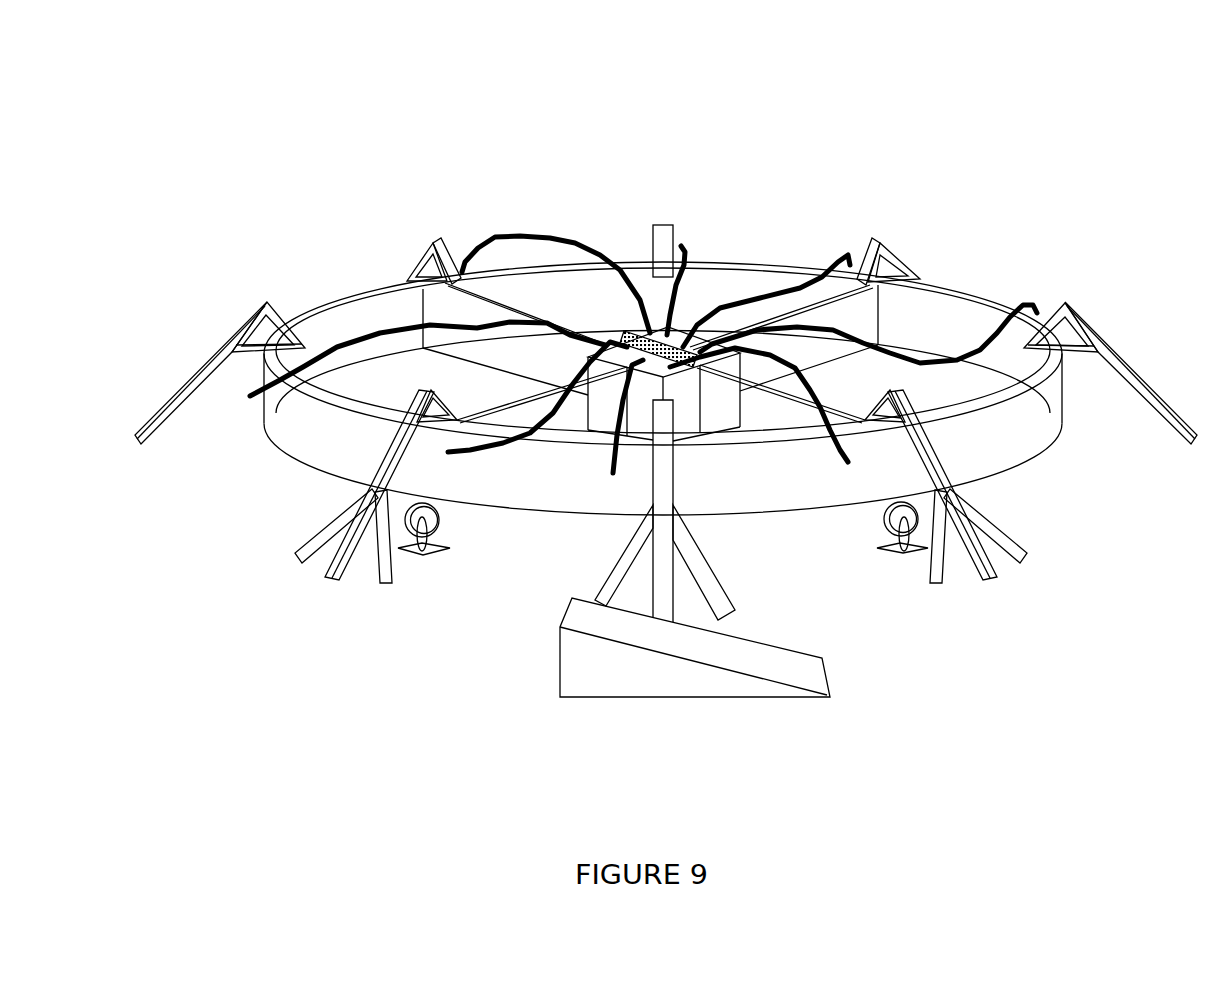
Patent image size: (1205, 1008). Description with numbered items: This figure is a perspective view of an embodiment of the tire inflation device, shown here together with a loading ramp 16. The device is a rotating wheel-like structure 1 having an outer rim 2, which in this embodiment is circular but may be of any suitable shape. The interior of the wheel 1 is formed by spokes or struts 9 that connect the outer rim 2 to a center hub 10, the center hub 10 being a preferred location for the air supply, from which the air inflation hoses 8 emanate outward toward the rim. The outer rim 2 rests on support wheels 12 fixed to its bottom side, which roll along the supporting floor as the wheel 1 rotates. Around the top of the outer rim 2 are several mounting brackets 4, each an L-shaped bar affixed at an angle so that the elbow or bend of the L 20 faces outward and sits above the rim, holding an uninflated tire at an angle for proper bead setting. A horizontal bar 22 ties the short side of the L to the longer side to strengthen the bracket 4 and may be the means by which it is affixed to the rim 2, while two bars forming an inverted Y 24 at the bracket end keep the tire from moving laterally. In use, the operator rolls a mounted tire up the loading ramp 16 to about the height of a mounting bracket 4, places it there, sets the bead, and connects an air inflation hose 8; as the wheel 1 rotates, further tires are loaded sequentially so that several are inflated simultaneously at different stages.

The wheel-like structure 1 is at (807, 130).
The outer rim 2 is at (302, 448).
The mounting bracket 4 is at (731, 570).
The air inflation hose 8 is at (372, 326).
The spokes or struts 9 is at (582, 424).
The center hub 10 is at (652, 314).
The support wheels 12 is at (423, 573).
The loading ramp 16 is at (726, 652).
The elbow or bend of the L 20 is at (1059, 287).
The horizontal bar 22 is at (1084, 370).
The inverted Y 24 is at (374, 591).